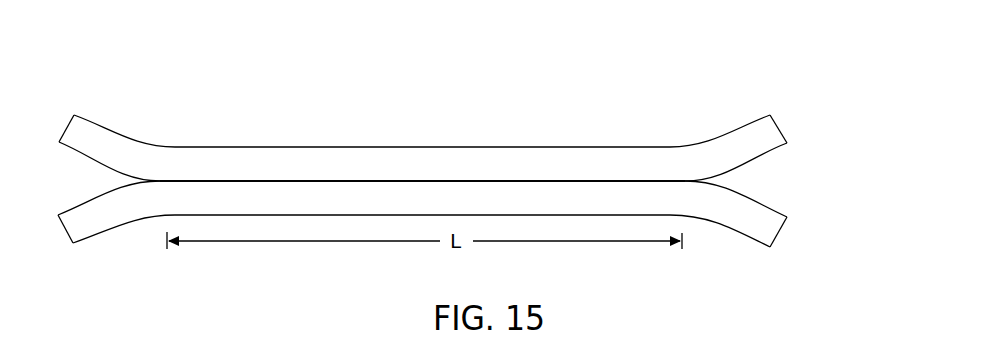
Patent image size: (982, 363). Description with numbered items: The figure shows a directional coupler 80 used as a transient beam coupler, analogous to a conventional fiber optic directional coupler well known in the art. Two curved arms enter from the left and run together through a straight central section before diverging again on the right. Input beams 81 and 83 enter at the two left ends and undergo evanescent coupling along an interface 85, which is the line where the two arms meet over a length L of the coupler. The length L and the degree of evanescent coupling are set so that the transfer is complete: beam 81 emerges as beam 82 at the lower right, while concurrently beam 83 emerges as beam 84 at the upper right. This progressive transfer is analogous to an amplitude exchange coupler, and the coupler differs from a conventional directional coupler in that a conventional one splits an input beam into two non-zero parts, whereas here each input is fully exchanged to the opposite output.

The directional coupler 80 is at (222, 121).
The input beam 81 is at (32, 110).
The output beam 82 is at (785, 230).
The input beam 83 is at (32, 248).
The output beam 84 is at (783, 130).
The interface 85 is at (458, 181).